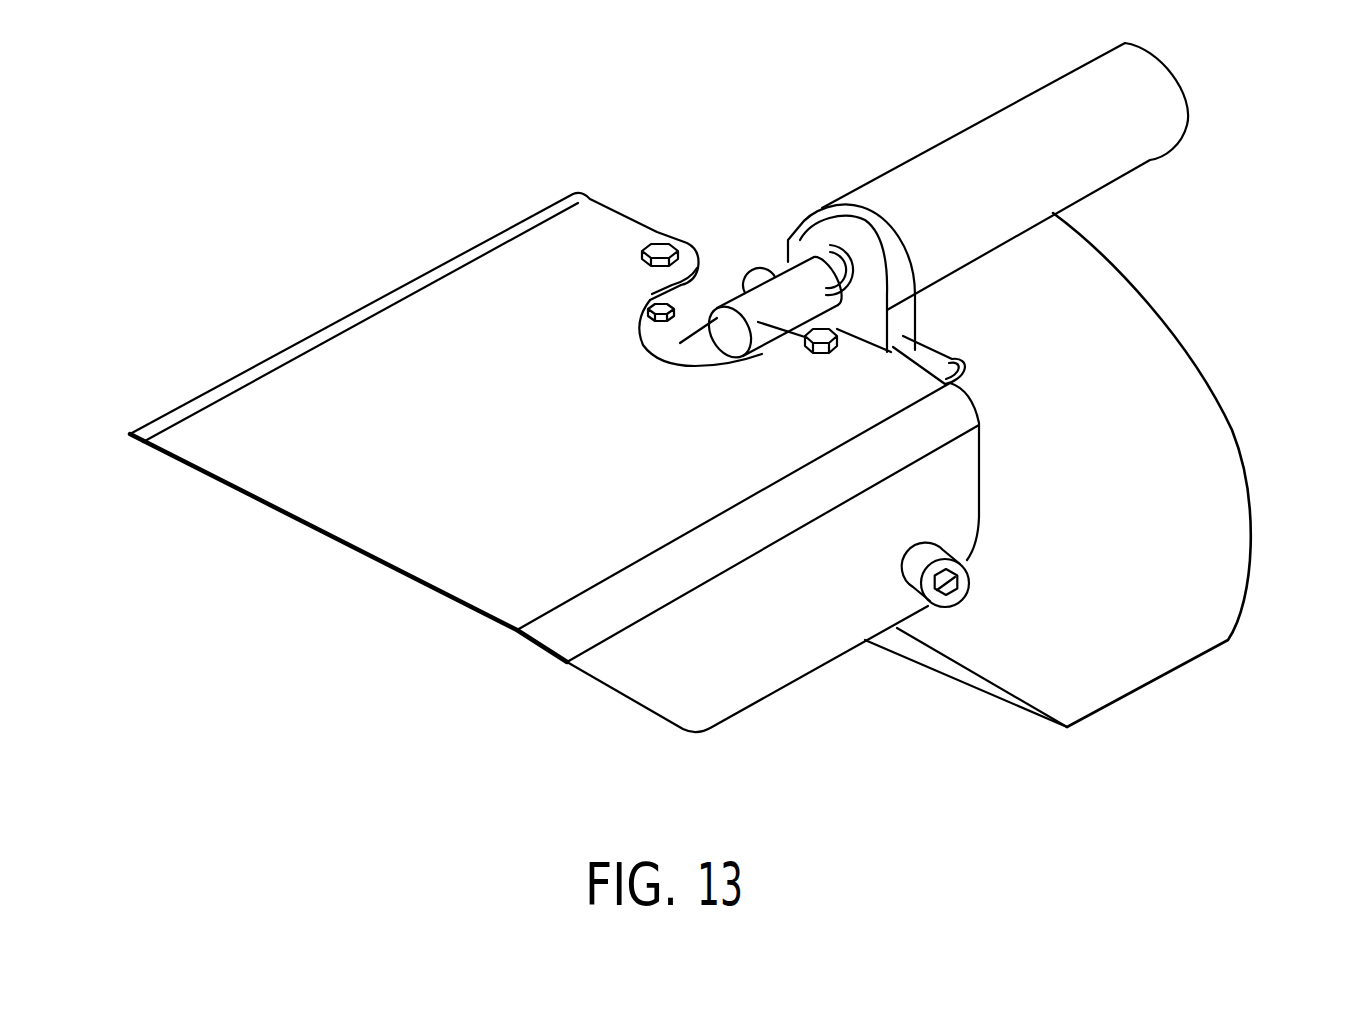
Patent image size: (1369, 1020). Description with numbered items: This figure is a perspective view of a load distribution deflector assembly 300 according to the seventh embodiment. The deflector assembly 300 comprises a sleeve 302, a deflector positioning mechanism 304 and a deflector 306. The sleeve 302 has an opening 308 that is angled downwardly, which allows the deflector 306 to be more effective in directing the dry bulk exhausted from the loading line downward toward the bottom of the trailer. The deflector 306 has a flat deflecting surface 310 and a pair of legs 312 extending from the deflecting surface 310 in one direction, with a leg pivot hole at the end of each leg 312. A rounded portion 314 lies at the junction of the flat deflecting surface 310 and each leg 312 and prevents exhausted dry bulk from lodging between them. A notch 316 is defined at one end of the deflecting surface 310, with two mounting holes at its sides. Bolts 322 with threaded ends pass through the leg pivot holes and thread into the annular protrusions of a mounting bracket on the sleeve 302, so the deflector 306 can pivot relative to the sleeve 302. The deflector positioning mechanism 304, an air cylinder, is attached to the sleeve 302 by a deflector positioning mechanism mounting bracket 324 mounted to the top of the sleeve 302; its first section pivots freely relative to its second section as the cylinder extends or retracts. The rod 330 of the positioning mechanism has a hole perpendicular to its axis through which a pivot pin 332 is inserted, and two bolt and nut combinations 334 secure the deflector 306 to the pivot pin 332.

The deflector assembly 300 is at (288, 170).
The sleeve 302 is at (1205, 526).
The deflector positioning mechanism 304 is at (936, 175).
The deflector 306 is at (410, 522).
The opening 308 is at (955, 668).
The flat deflecting surface 310 is at (340, 405).
The legs 312 is at (684, 660).
The rounded portion 314 is at (414, 287).
The notch 316 is at (667, 333).
The bolts 322 is at (967, 563).
The deflector positioning mechanism mounting bracket 324 is at (808, 224).
The rod 330 is at (777, 302).
The pivot pin 332 is at (683, 298).
The bolt and nut combinations 334 is at (659, 244).